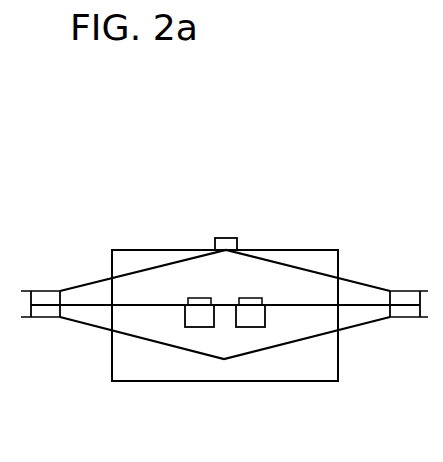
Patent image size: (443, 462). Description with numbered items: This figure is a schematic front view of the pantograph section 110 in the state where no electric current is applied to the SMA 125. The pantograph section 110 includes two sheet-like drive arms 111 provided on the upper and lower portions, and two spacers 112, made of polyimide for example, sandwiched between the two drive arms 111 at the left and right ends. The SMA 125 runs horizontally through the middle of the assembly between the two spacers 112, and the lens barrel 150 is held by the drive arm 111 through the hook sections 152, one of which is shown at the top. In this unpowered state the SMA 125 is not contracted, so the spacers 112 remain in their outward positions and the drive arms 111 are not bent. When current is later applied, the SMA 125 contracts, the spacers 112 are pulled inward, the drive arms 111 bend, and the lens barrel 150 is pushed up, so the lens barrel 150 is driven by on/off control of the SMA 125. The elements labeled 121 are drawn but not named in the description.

The pantograph section 110 is at (264, 135).
The drive arm 111 is at (303, 270).
The spacer 112 is at (42, 298).
The optical element 121 is at (250, 313).
The SMA 125 is at (133, 305).
The lens barrel 150 is at (333, 343).
The hook section 152 is at (235, 232).